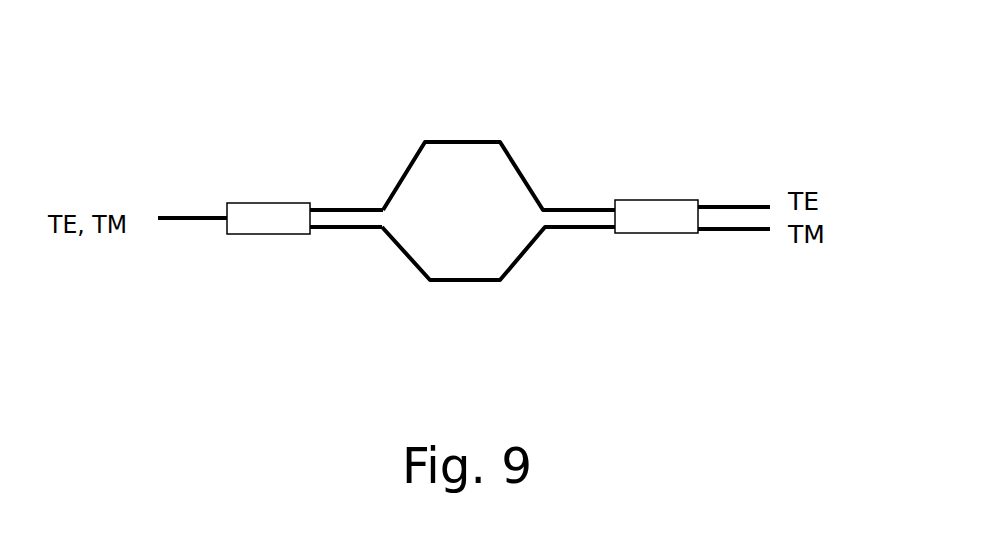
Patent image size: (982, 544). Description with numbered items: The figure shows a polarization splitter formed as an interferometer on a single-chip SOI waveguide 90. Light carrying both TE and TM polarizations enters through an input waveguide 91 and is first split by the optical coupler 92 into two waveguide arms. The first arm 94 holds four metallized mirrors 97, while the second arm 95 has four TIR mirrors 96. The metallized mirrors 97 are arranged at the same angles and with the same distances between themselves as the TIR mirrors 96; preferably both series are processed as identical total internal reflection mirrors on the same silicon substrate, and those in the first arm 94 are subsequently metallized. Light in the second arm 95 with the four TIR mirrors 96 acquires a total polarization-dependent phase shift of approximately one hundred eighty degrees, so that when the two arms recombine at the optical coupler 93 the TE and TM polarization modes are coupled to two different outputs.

The single-chip SOI waveguide 90 is at (598, 165).
The input waveguide 91 is at (193, 217).
The optical coupler 92 is at (285, 213).
The optical coupler 93 is at (660, 212).
The first arm 94 is at (358, 203).
The second arm 95 is at (362, 228).
The TIR mirrors 96 is at (547, 228).
The metallized mirrors 97 is at (385, 203).